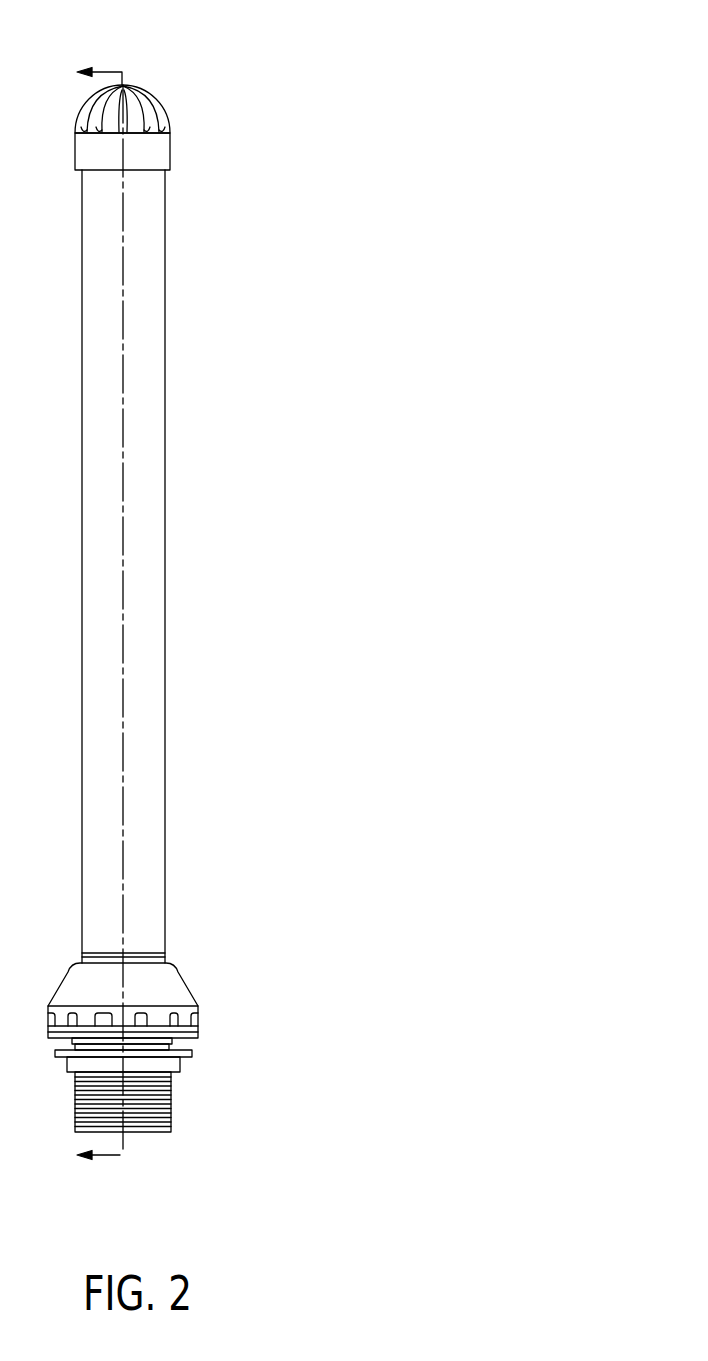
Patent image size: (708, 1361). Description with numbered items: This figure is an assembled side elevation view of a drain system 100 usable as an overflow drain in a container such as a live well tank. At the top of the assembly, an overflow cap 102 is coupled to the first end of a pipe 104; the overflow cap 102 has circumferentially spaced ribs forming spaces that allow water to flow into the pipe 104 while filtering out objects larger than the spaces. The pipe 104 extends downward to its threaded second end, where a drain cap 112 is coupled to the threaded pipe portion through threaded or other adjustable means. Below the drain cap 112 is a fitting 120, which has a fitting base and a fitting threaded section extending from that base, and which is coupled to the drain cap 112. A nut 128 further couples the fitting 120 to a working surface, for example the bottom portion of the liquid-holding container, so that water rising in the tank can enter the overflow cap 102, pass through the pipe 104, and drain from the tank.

The drain system 100 is at (225, 620).
The overflow cap 102 is at (186, 147).
The pipe 104 is at (182, 428).
The drain cap 112 is at (205, 972).
The nut 128 is at (181, 1064).
The fitting 120 is at (173, 1148).